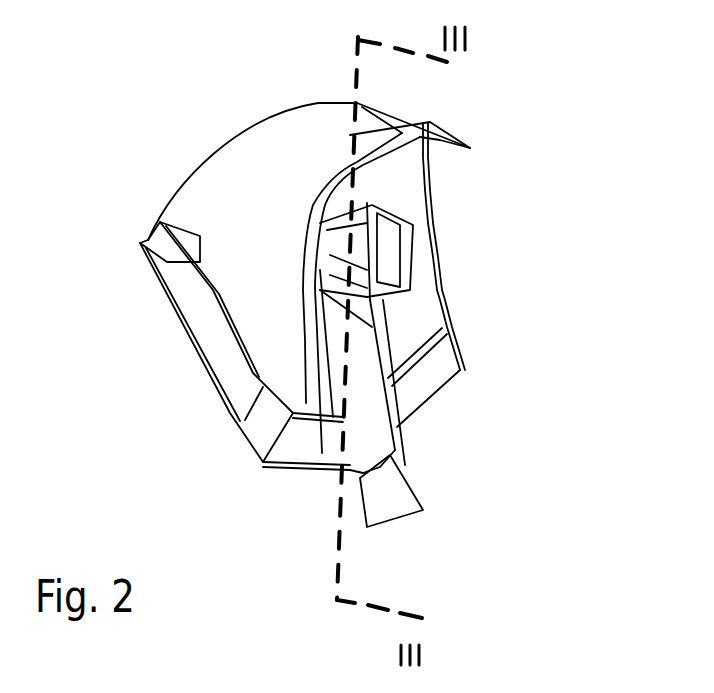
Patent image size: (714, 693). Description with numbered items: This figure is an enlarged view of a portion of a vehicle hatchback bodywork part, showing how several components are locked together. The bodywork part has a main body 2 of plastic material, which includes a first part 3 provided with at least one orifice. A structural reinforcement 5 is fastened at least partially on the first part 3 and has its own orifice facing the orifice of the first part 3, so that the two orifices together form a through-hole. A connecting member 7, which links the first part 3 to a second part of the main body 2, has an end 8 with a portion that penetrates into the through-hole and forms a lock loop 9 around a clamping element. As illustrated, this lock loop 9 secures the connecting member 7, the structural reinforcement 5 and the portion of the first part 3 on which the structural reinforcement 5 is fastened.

The main body 2 is at (200, 355).
The first part 3 is at (438, 301).
The structural reinforcement 5 is at (422, 395).
The connecting member 7 is at (375, 506).
The end 8 is at (315, 487).
The lock loop 9 is at (412, 223).